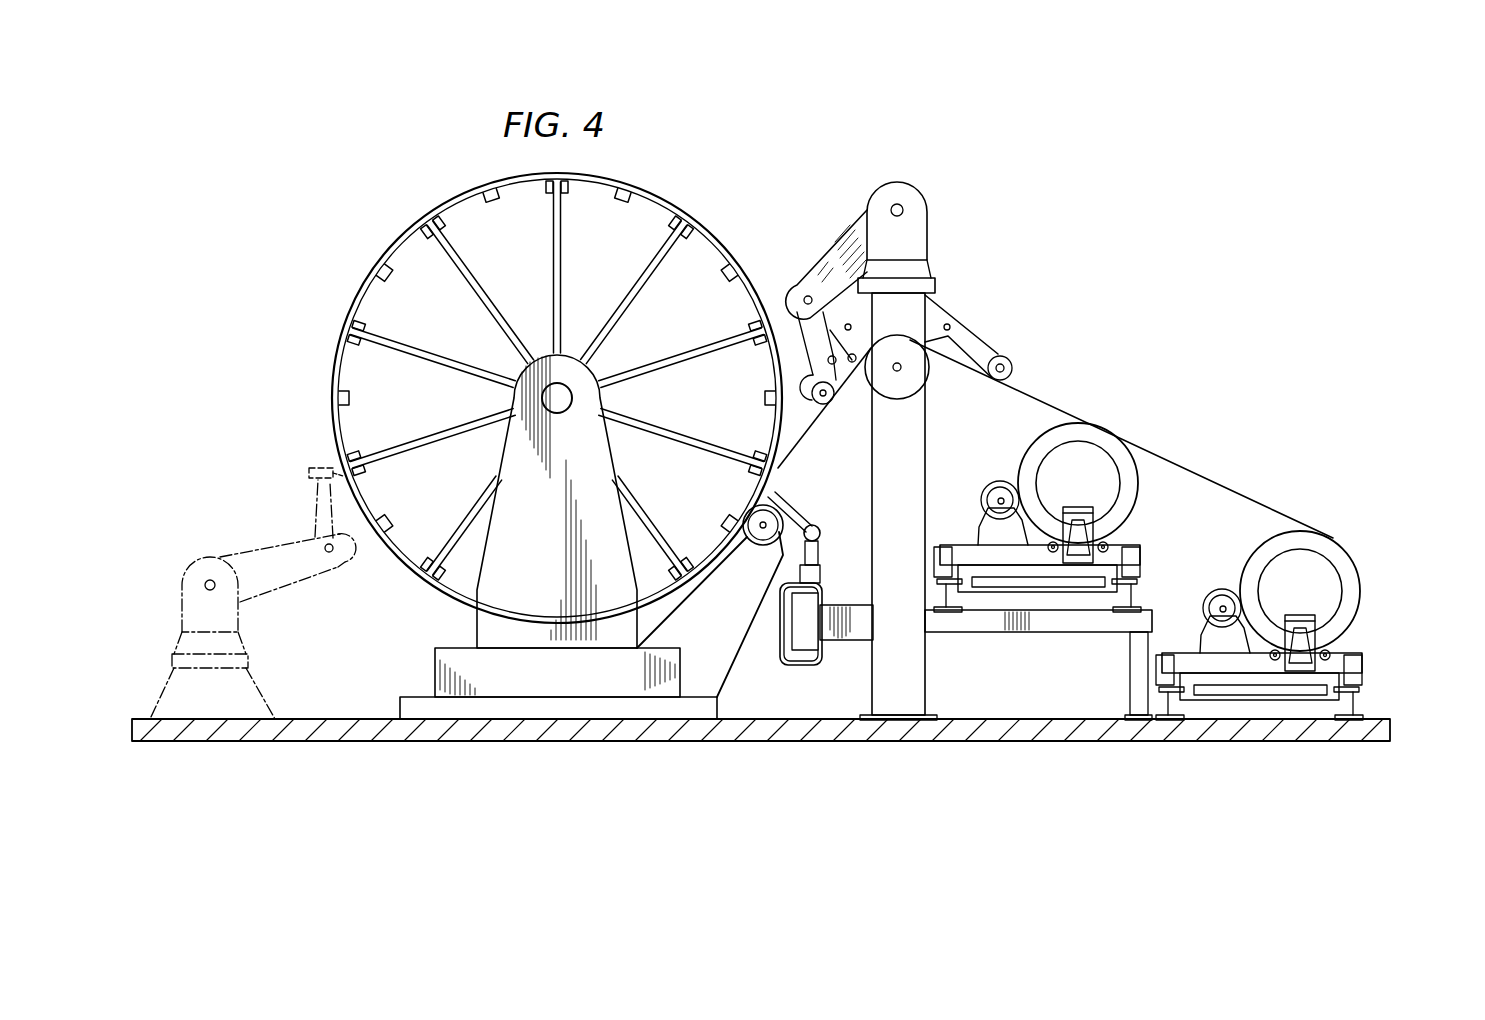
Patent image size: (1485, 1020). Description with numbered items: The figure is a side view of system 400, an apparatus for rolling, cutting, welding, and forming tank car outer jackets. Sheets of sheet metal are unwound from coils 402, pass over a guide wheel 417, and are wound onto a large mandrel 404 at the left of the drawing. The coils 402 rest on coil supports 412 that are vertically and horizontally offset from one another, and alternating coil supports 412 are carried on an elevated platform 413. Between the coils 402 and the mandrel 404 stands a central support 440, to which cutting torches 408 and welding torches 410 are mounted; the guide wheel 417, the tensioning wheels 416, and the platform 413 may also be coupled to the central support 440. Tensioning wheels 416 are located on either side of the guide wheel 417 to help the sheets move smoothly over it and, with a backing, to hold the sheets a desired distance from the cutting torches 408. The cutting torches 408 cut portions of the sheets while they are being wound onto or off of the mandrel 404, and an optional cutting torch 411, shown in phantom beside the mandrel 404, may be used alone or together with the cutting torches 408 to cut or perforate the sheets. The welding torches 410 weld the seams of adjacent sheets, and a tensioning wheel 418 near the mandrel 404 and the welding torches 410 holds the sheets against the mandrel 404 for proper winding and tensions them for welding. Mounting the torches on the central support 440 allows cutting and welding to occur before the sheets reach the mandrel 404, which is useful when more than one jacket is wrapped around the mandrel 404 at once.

The system 400 is at (1293, 335).
The coils 402 is at (1021, 463).
The mandrel 404 is at (337, 366).
The cutting torches 408 is at (897, 181).
The welding torches 410 is at (797, 508).
The cutting torch 411 is at (268, 545).
The coil supports 412 is at (1160, 561).
The elevated platform 413 is at (1080, 634).
The tensioning wheels 416 is at (993, 343).
The guide wheel 417 is at (929, 373).
The tensioning wheel 418 is at (731, 668).
The central support 440 is at (927, 670).